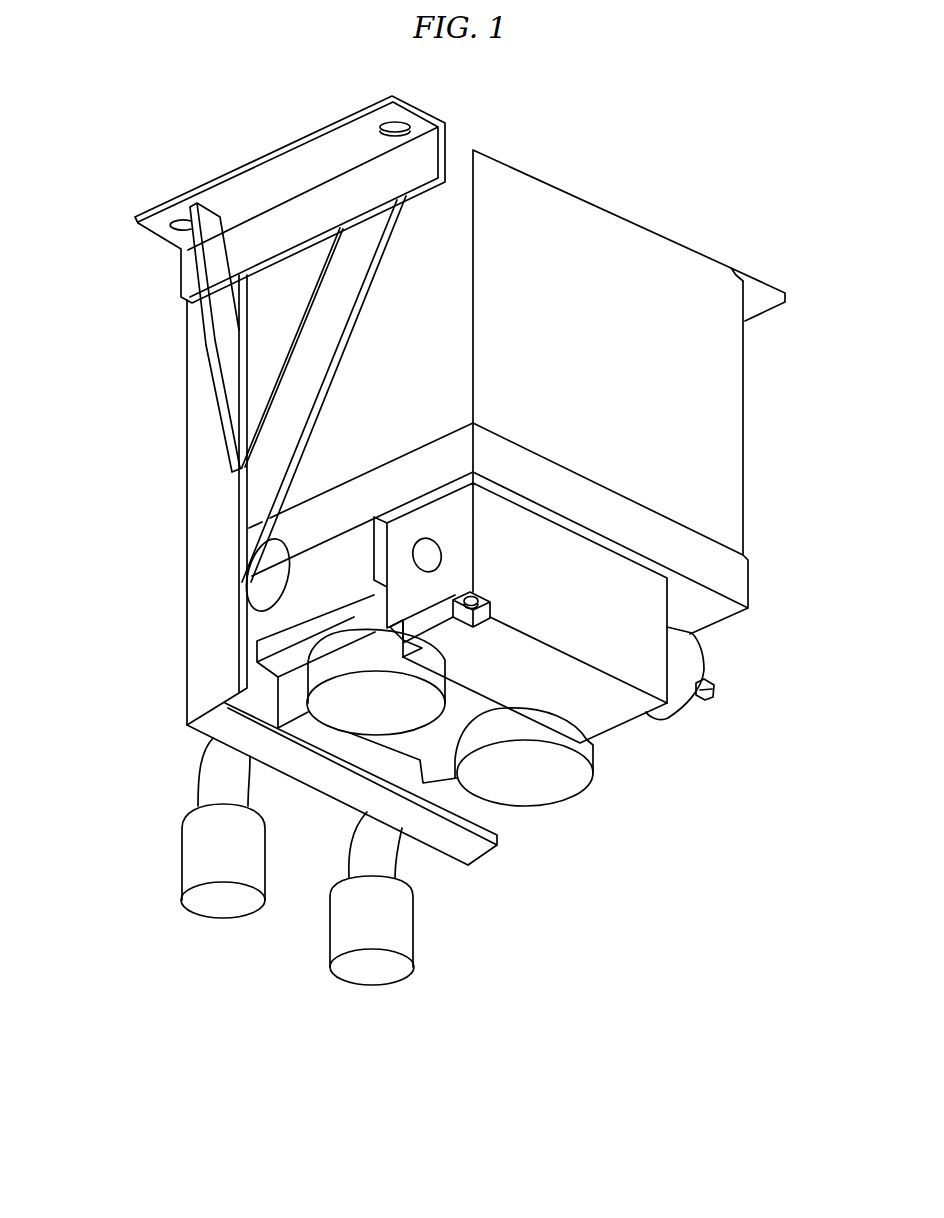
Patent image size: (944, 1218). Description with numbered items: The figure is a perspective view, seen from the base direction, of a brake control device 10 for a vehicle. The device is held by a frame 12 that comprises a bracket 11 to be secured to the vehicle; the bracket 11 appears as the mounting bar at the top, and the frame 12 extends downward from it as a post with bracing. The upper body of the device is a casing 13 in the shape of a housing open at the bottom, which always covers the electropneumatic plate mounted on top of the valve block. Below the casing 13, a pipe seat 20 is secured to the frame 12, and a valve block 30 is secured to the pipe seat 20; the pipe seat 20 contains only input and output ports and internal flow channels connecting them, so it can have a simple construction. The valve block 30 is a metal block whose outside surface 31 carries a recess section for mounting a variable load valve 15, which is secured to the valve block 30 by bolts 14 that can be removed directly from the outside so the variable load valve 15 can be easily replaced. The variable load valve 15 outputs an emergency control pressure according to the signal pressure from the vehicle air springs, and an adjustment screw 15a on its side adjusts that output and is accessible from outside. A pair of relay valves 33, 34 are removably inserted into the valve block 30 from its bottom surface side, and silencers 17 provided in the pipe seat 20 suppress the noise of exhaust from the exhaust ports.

The brake control device 10 is at (669, 207).
The bracket 11 is at (134, 216).
The frame 12 is at (162, 424).
The casing 13 is at (760, 442).
The bolts 14 is at (482, 605).
The variable load valve 15 is at (693, 725).
The adjustment screw 15a is at (717, 690).
The silencer 17 is at (213, 907).
The pipe seat 20 is at (414, 784).
The valve block 30 is at (767, 569).
The surface 31 is at (737, 589).
The relay valve 33 is at (348, 706).
The relay valve 34 is at (260, 597).